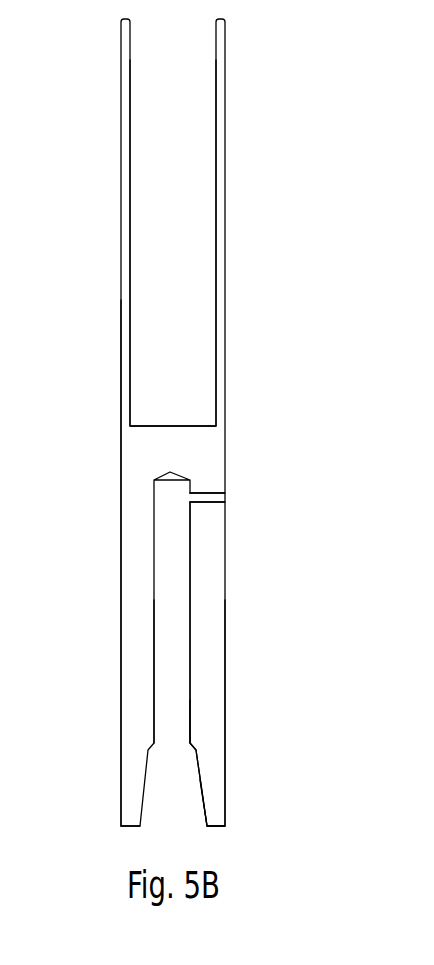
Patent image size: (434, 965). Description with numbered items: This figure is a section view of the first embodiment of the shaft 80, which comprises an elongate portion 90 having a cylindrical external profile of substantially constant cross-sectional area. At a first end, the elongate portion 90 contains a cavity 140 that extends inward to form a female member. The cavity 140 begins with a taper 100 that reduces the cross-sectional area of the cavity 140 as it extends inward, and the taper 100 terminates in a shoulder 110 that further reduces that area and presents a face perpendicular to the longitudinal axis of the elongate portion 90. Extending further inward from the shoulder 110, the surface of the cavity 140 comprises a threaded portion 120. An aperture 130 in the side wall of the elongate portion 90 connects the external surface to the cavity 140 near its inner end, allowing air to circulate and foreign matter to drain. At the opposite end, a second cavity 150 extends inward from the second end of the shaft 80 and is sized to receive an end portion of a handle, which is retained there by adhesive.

The shaft 80 is at (98, 557).
The elongate portion 90 is at (134, 461).
The taper 100 is at (205, 793).
The shoulder 110 is at (196, 748).
The threaded portion 120 is at (155, 637).
The aperture 130 is at (226, 496).
The cavity 140 is at (170, 540).
The second cavity 150 is at (158, 242).